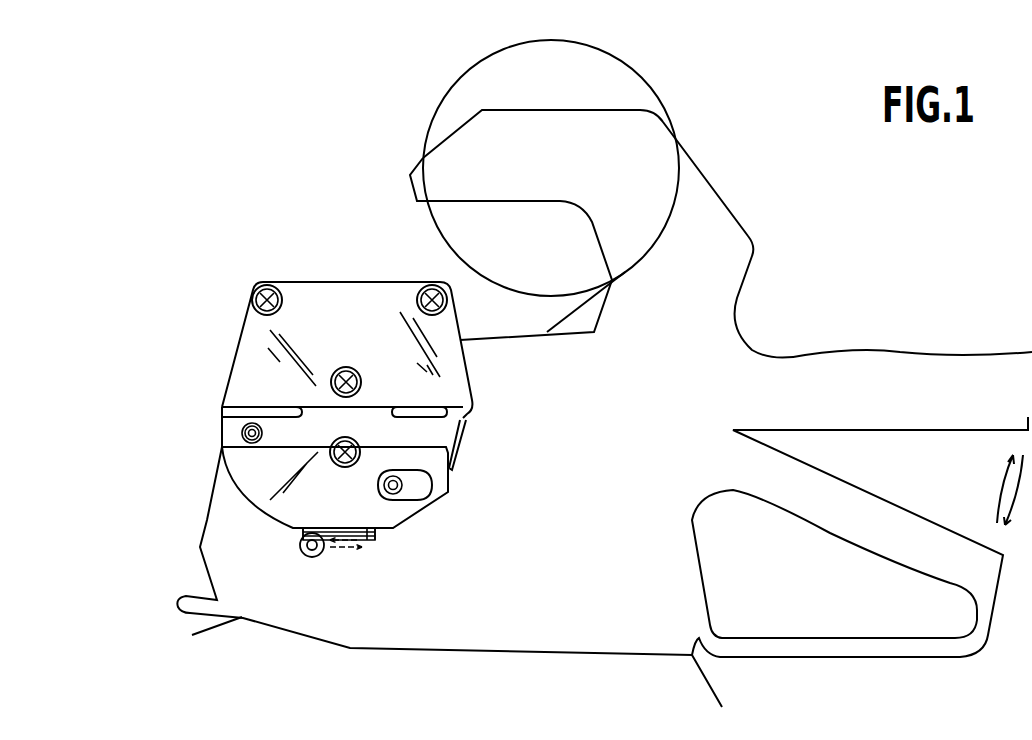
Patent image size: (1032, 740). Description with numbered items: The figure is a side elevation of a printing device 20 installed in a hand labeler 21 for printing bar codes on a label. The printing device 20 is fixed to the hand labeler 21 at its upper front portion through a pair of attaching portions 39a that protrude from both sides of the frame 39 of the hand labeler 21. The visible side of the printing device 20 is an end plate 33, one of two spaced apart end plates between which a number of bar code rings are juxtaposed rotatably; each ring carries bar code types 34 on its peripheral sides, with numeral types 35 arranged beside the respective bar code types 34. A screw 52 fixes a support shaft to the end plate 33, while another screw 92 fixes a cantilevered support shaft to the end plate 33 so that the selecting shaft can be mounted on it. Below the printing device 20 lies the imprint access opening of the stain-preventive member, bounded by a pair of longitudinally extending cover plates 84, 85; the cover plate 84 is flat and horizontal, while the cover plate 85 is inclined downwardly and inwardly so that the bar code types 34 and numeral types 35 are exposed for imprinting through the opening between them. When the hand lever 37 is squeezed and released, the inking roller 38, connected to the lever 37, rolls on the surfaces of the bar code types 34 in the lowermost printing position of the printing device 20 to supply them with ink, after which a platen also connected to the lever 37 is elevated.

The printing device 20 is at (393, 278).
The hand labeler 21 is at (714, 186).
The end plate 33 is at (245, 367).
The bar code types 34 is at (354, 530).
The numeral types 35 is at (370, 541).
The hand lever 37 is at (943, 532).
The inking roller 38 is at (315, 554).
The frame 39 is at (353, 273).
The attaching portions 39a is at (233, 432).
The screw 52 is at (338, 466).
The cover plate 84 is at (303, 535).
The cover plate 85 is at (383, 533).
The screw 92 is at (360, 378).